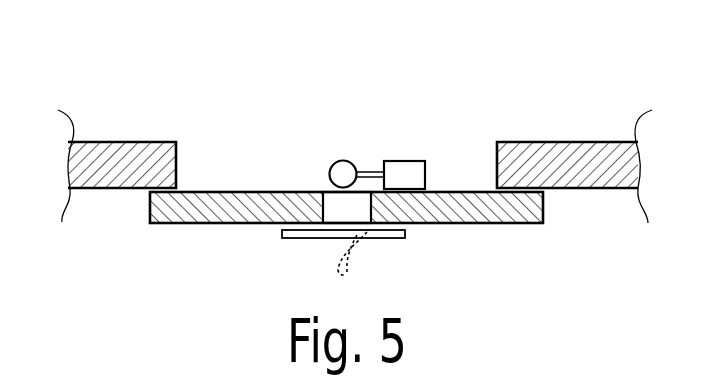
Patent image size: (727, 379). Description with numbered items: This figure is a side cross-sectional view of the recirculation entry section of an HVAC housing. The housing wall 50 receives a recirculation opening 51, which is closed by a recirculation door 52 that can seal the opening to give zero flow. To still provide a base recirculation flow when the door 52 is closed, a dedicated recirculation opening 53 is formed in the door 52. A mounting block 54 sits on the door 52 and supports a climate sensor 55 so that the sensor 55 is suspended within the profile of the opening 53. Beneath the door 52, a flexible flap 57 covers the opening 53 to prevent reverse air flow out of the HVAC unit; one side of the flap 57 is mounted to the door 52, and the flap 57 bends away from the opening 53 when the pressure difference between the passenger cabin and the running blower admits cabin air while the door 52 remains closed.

The wall 50 is at (127, 142).
The recirculation opening 51 is at (176, 158).
The recirculation door 52 is at (185, 224).
The dedicated recirculation opening 53 is at (332, 203).
The mounting block 54 is at (415, 161).
The climate sensor 55 is at (345, 161).
The flexible flap 57 is at (296, 239).